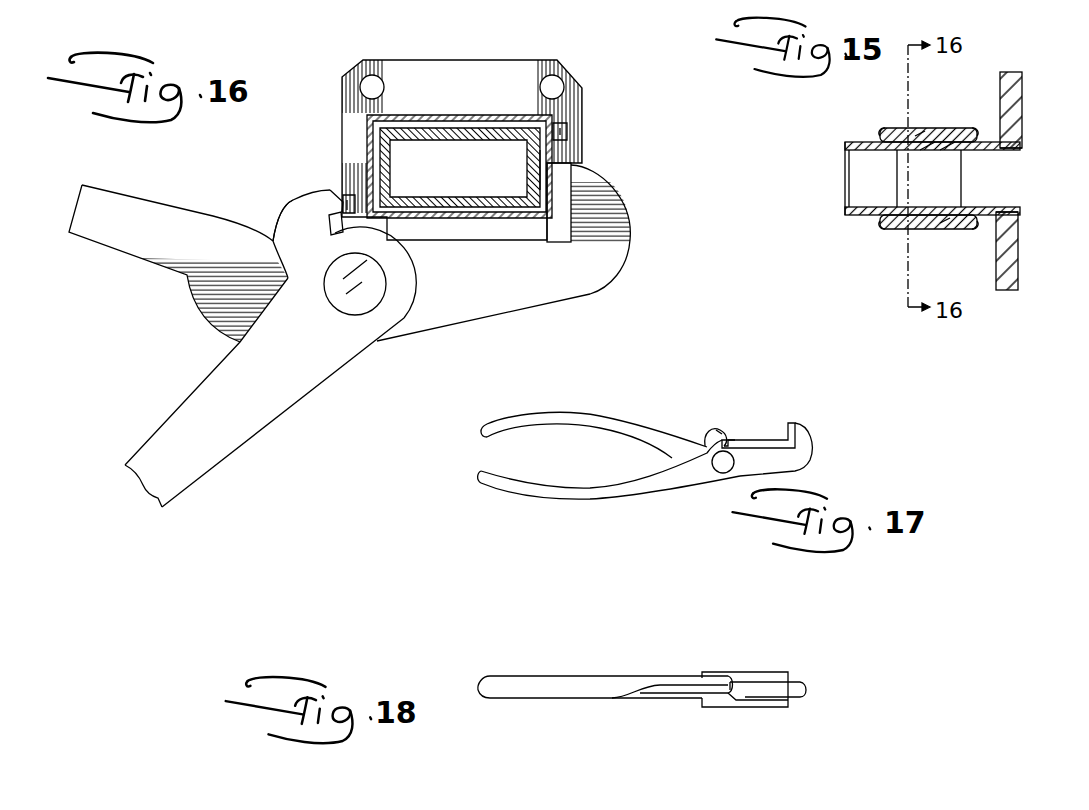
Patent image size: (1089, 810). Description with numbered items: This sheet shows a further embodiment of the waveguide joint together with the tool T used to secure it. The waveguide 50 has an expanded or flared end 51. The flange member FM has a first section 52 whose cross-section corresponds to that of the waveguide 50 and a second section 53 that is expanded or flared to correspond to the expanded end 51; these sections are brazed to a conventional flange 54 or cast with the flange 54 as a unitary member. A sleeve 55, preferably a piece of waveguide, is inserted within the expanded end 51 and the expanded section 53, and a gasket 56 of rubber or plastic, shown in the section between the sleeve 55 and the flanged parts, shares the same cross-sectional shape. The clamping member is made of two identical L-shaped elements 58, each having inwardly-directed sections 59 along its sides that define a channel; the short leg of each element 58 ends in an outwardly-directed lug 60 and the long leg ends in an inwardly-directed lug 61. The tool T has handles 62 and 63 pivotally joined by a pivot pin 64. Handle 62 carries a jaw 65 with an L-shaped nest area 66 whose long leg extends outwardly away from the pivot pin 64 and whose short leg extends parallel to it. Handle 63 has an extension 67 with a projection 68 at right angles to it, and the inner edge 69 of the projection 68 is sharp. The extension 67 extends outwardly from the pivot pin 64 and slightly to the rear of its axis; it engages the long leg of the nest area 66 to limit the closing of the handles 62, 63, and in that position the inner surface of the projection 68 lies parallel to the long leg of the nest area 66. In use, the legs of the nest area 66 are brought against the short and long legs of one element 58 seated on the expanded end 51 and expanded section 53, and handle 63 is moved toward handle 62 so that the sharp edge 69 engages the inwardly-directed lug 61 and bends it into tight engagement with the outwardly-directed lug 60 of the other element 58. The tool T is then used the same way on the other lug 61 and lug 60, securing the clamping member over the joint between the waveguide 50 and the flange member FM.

In FIG. 15, the waveguide 50 is at (850, 212).
In FIG. 16, the expanded end 51 is at (540, 169).
In FIG. 15, the expanded end 51 is at (916, 135).
In FIG. 15, the first section 52 is at (1000, 155).
In FIG. 15, the second section 53 is at (947, 222).
In FIG. 15, the flange 54 is at (1011, 122).
In FIG. 16, the sleeve 55 is at (447, 132).
In FIG. 15, the sleeve 55 is at (905, 202).
In FIG. 15, the inner web 56 is at (934, 138).
In FIG. 16, the L-shaped element 58 is at (422, 115).
In FIG. 15, the L-shaped element 58 is at (897, 128).
In FIG. 15, the inwardly-directed section 59 is at (996, 138).
In FIG. 16, the outwardly-directed lug 60 is at (560, 123).
In FIG. 16, the inwardly-directed lug 61 is at (563, 130).
In FIG. 16, the handle 62 is at (130, 240).
In FIG. 17, the handle 62 is at (561, 416).
In FIG. 18, the handle 62 is at (650, 699).
In FIG. 16, the handle 63 is at (213, 458).
In FIG. 17, the handle 63 is at (533, 498).
In FIG. 18, the handle 63 is at (532, 680).
In FIG. 16, the pivot pin 64 is at (340, 297).
In FIG. 17, the pivot pin 64 is at (716, 470).
In FIG. 16, the jaw 65 is at (617, 257).
In FIG. 17, the jaw 65 is at (808, 448).
In FIG. 18, the jaw 65 is at (805, 689).
In FIG. 16, the nest area 66 is at (539, 237).
In FIG. 17, the nest area 66 is at (778, 440).
In FIG. 18, the nest area 66 is at (749, 673).
In FIG. 16, the extension 67 is at (285, 240).
In FIG. 17, the extension 67 is at (706, 441).
In FIG. 16, the projection 68 is at (330, 203).
In FIG. 17, the projection 68 is at (721, 436).
In FIG. 17, the inner edge 69 is at (729, 440).
In FIG. 16, the flange member FM is at (477, 60).
In FIG. 15, the flange member FM is at (1025, 80).
In FIG. 16, the tool T is at (500, 317).
In FIG. 17, the tool T is at (479, 486).
In FIG. 18, the tool T is at (685, 673).